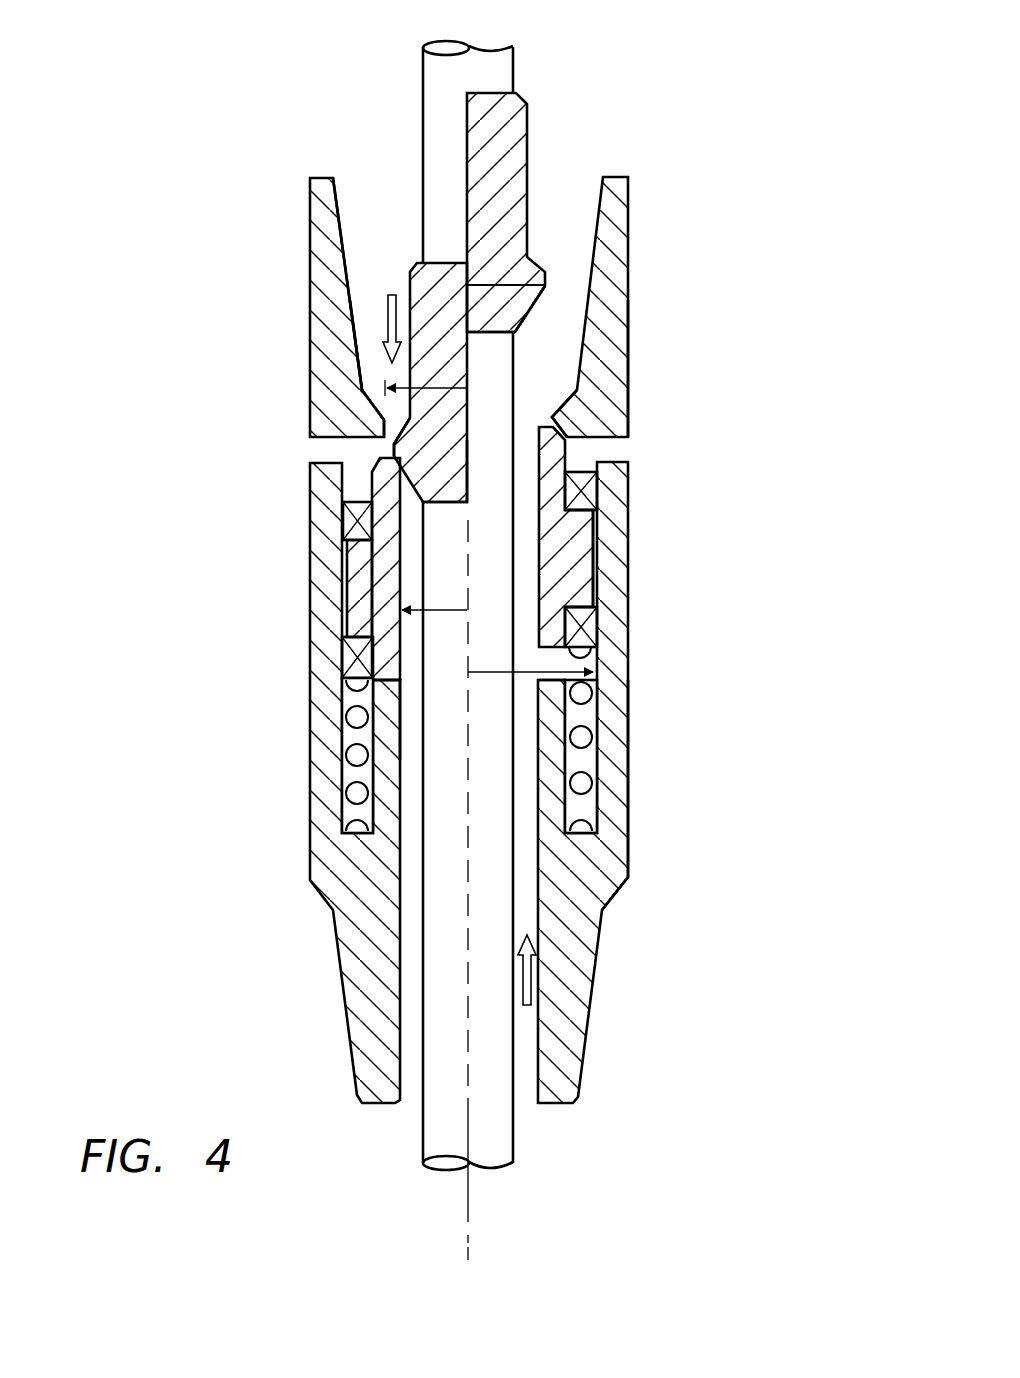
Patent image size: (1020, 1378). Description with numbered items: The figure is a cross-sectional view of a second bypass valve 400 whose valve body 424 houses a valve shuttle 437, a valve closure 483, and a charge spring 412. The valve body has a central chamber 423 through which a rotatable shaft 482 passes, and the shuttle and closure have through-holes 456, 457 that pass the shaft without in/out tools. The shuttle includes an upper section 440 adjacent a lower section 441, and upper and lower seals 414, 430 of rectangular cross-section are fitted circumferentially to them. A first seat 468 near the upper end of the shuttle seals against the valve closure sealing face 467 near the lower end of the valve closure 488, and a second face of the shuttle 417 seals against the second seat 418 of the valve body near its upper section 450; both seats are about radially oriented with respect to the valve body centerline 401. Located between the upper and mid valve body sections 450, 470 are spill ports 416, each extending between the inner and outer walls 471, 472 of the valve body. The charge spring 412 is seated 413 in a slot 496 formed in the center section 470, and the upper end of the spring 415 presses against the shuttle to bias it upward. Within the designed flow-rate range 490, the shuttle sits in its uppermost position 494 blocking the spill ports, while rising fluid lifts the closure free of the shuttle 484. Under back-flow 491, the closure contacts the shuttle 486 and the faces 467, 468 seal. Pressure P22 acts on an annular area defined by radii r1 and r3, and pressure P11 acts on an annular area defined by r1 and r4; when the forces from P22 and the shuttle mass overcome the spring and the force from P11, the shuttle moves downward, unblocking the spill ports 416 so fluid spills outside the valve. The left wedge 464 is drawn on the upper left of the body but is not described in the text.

The second bypass valve 400 is at (224, 880).
The valve body centerline 401 is at (472, 1208).
The charge spring 412 is at (357, 742).
The spring seat 413 is at (345, 818).
The upper seal 414 is at (405, 535).
The upper end of the spring 415 is at (350, 684).
The spill port 416 is at (390, 458).
The second face of the shuttle 417 is at (372, 470).
The second seat 418 is at (378, 421).
The central chamber 423 is at (530, 600).
The valve body 424 is at (645, 342).
The lower seal 430 is at (345, 655).
The valve shuttle 437 is at (575, 453).
The upper section of the shuttle 440 is at (585, 490).
The lower section of the shuttle 441 is at (548, 668).
The upper valve body section 450 is at (612, 248).
The shuttle through-hole 456 is at (405, 548).
The valve closure through-hole 457 is at (514, 92).
The left wedge 464 is at (372, 262).
The valve closure sealing face 467 is at (545, 290).
The first seat 468 is at (547, 427).
The mid valve body section 470 is at (613, 700).
The inner wall of the valve body 471 is at (357, 346).
The outer wall of the valve body 472 is at (360, 332).
The rotatable shaft 482 is at (505, 1132).
The valve closure 483 is at (542, 175).
The valve closure lifted free of the shuttle 484 is at (503, 137).
The valve closure contacting the shuttle 486 is at (400, 280).
The lower end of the valve closure 488 is at (468, 487).
The designed flow-rate range 490 is at (530, 990).
The back-flow 491 is at (385, 300).
The uppermost position of the shuttle 494 is at (583, 550).
The slot 496 is at (585, 760).
The pressure above the first seat P22 is at (348, 190).
The pressure below the valve closure P11 is at (525, 897).
The radius r1 is at (442, 613).
The radius r3 is at (445, 385).
The radius r4 is at (495, 675).